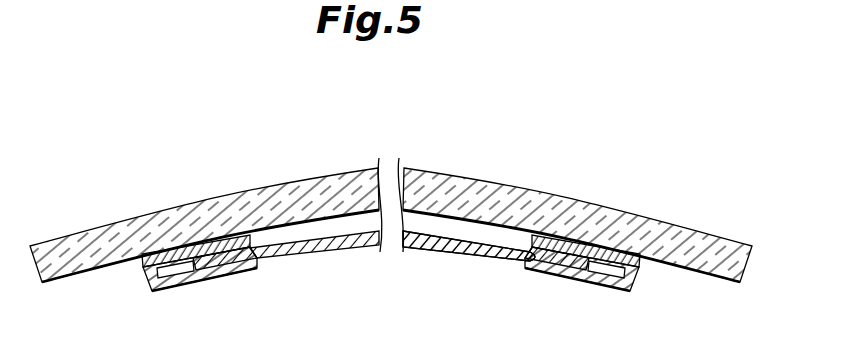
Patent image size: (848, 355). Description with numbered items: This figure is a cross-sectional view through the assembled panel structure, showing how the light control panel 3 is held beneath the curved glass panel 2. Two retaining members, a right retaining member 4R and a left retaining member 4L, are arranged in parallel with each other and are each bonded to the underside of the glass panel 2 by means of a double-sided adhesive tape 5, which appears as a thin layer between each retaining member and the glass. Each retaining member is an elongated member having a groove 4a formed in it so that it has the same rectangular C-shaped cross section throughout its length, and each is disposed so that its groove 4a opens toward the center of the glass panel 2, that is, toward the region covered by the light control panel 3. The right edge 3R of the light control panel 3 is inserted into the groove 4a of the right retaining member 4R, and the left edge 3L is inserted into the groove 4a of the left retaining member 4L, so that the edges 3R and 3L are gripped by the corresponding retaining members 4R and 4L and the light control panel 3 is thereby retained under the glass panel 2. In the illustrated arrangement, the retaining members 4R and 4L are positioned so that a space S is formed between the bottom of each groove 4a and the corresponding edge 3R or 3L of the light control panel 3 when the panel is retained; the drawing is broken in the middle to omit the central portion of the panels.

The glass panel 2 is at (470, 177).
The light control panel 3 is at (415, 248).
The right edge 3R is at (225, 273).
The left edge 3L is at (552, 275).
The right retaining member 4R is at (167, 293).
The left retaining member 4L is at (618, 293).
The groove 4a is at (272, 258).
The double-sided adhesive tape 5 is at (133, 262).
The space S is at (175, 278).